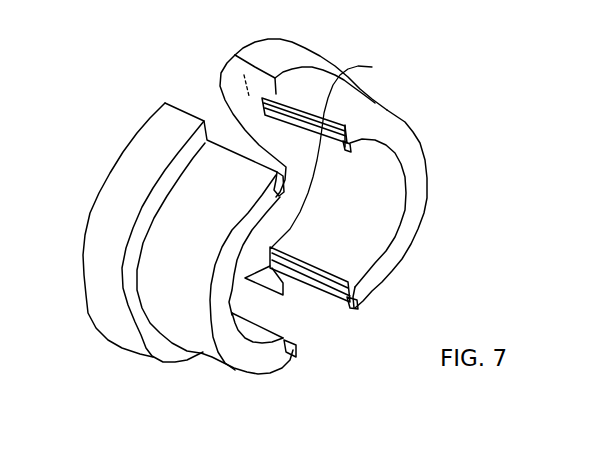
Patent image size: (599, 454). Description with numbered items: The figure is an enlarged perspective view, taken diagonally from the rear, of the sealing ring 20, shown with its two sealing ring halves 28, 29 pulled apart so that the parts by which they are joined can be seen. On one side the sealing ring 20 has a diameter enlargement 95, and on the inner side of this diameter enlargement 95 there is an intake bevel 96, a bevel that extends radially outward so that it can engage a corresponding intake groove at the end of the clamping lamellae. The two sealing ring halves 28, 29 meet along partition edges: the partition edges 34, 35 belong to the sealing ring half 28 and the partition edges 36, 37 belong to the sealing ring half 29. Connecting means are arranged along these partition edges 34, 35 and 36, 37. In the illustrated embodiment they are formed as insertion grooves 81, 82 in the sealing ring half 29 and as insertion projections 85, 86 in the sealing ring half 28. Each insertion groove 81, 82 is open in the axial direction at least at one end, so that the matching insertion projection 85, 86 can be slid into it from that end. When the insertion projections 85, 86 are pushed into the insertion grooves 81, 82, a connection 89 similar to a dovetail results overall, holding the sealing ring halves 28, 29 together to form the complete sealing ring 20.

The sealing ring 20 is at (407, 83).
The sealing ring half 28 is at (415, 205).
The sealing ring half 29 is at (203, 356).
The partition edge 34 is at (410, 118).
The partition edge 35 is at (362, 285).
The partition edge 36 is at (203, 117).
The partition edge 37 is at (292, 357).
The insertion groove 81 is at (296, 352).
The insertion groove 82 is at (222, 140).
The insertion projection 85 is at (333, 96).
The insertion projection 86 is at (350, 308).
The connection 89 is at (273, 210).
The diameter enlargement 95 is at (293, 48).
The intake bevel 96 is at (240, 56).